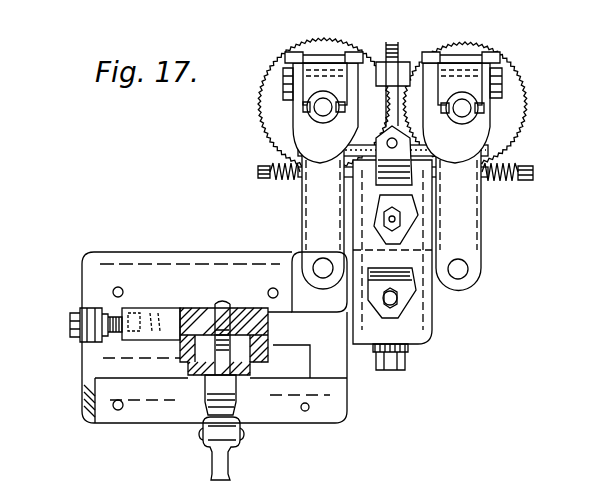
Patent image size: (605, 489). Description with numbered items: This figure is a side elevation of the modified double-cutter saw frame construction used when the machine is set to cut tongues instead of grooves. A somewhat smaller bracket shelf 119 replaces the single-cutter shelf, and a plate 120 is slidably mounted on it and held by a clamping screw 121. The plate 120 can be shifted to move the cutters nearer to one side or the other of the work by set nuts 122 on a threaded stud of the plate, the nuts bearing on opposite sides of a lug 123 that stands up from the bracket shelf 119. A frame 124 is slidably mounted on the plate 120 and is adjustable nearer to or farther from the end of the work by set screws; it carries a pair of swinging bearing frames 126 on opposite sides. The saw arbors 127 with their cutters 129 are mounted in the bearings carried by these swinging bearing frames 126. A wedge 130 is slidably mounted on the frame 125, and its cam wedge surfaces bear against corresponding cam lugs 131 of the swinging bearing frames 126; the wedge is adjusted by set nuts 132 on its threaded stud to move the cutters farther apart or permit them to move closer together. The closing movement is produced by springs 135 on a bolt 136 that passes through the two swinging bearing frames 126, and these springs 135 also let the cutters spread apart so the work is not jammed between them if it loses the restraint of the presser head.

The bracket shelf 119 is at (122, 258).
The plate 120 is at (152, 318).
The clamping screw 121 is at (240, 426).
The set nuts 122 is at (92, 308).
The lug 123 is at (90, 330).
The frame 124 is at (432, 292).
The frame 125 is at (420, 340).
The swinging bearing frames 126 is at (304, 220).
The saw arbors 127 is at (312, 108).
The cutters 129 is at (410, 87).
The wedge 130 is at (394, 117).
The cam lugs 131 is at (340, 177).
The set nuts 132 is at (412, 183).
The springs 135 is at (272, 176).
The bolt 136 is at (440, 190).